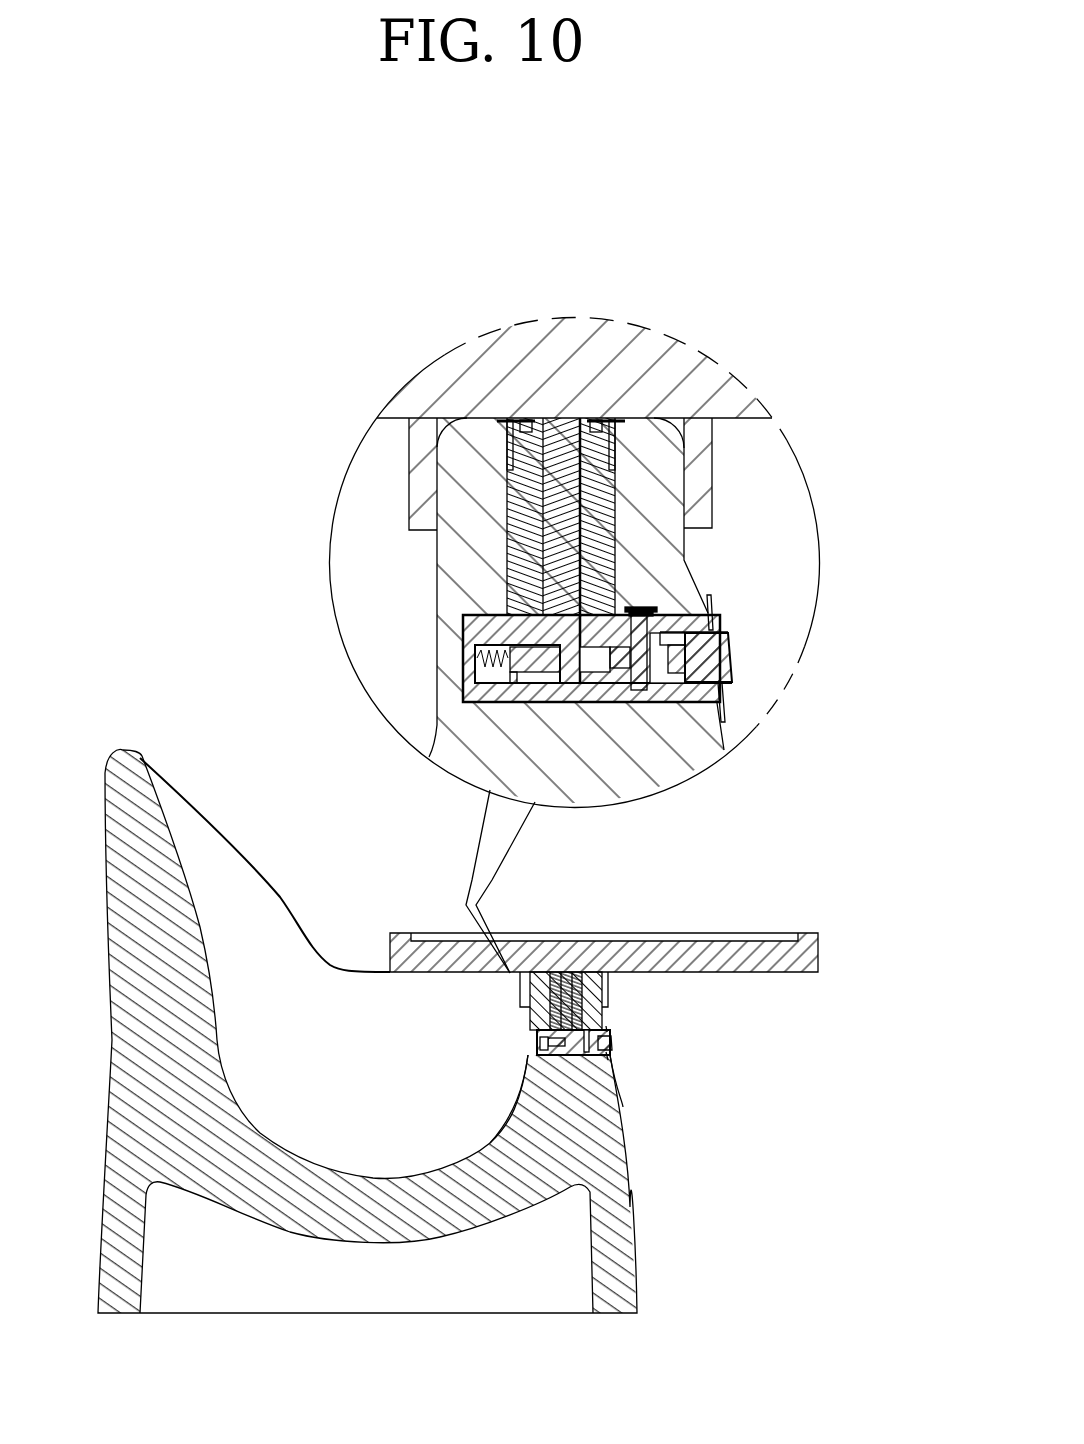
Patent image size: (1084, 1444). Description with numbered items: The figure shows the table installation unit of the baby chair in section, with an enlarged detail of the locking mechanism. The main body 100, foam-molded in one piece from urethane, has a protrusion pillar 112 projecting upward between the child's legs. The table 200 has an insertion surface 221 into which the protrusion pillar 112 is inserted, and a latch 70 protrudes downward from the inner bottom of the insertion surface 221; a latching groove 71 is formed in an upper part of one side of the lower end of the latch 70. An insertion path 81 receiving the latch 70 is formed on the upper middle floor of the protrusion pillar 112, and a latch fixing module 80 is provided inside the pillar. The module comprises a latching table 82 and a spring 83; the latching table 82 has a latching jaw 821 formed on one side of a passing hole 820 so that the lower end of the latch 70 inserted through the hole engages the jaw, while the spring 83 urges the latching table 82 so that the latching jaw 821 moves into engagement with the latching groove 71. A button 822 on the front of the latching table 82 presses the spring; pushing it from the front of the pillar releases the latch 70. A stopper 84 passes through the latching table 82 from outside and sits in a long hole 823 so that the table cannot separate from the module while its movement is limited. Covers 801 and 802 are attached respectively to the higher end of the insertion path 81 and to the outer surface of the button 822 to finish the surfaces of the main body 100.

The main body 100 is at (638, 1230).
The protrusion pillar 112 is at (613, 1078).
The table 200 is at (675, 363).
The insertion surface 221 is at (420, 482).
The latch 70 is at (555, 553).
The latching groove 71 is at (552, 672).
The latch fixing module 80 is at (708, 695).
The insertion path 81 is at (585, 482).
The latching table 82 is at (728, 655).
The button 822 is at (537, 846).
The latching jaw 821 is at (517, 678).
The passing hole 820 is at (595, 663).
The long hole 823 is at (657, 662).
The spring 83 is at (462, 647).
The stopper 84 is at (643, 610).
The cover 801 is at (517, 418).
The cover 802 is at (713, 610).